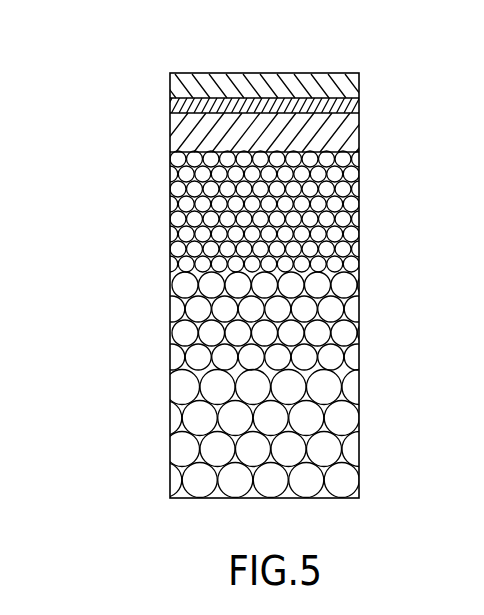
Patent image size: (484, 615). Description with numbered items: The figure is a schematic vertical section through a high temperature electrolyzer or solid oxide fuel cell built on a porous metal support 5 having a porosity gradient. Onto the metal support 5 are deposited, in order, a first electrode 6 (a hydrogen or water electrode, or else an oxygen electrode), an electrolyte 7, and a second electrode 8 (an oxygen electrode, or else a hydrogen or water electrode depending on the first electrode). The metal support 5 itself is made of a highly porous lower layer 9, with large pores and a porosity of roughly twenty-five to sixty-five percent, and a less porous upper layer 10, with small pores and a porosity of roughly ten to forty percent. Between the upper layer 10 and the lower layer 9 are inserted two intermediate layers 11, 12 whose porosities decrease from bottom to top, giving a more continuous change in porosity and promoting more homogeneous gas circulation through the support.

The metal support 5 is at (157, 154).
The first electrode 6 is at (180, 130).
The electrolyte 7 is at (178, 107).
The second electrode 8 is at (181, 84).
The highly porous lower layer 9 is at (371, 372).
The less porous upper layer 10 is at (371, 152).
The intermediate layer 11 is at (371, 275).
The intermediate layer 12 is at (371, 213).